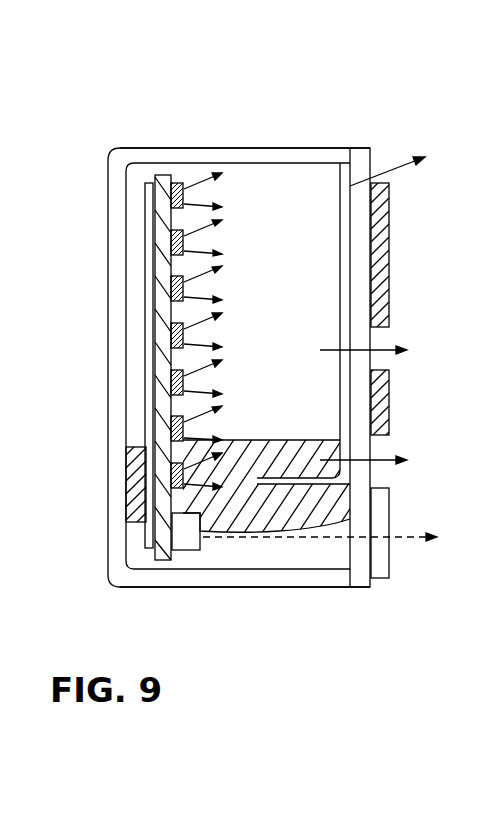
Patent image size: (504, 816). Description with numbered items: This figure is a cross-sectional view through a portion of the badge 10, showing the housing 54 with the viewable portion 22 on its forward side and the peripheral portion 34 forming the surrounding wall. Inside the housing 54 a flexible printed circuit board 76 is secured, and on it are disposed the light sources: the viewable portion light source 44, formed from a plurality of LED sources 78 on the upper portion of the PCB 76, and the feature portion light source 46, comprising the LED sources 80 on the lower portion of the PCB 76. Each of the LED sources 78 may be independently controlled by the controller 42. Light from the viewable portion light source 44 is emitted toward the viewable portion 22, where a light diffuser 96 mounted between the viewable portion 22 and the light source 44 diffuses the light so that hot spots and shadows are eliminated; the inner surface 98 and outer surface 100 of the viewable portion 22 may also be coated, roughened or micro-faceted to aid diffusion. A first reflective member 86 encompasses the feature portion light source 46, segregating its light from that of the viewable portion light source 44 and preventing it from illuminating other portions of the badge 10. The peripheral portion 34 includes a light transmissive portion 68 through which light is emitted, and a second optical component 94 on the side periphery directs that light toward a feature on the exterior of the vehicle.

The badge 10 is at (265, 108).
The viewable portion 22 is at (398, 282).
The peripheral portion 34 is at (291, 146).
The controller 42 is at (155, 327).
The viewable portion light source 44 is at (165, 198).
The feature portion light source 46 is at (197, 556).
The housing 54 is at (157, 150).
The light transmissive portion 68 is at (305, 532).
The flexible printed circuit board 76 is at (160, 226).
The LED sources 78 is at (158, 282).
The LED sources 80 is at (183, 537).
The first reflective member 86 is at (345, 495).
The second optical component 94 is at (284, 519).
The light diffuser 96 is at (345, 380).
The inner surface 98 is at (354, 163).
The outer surface 100 is at (372, 167).